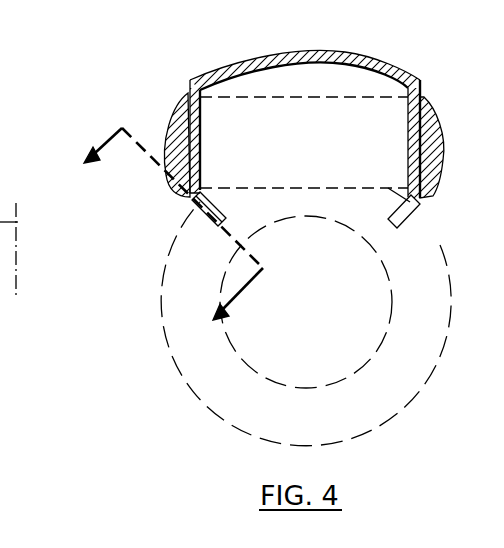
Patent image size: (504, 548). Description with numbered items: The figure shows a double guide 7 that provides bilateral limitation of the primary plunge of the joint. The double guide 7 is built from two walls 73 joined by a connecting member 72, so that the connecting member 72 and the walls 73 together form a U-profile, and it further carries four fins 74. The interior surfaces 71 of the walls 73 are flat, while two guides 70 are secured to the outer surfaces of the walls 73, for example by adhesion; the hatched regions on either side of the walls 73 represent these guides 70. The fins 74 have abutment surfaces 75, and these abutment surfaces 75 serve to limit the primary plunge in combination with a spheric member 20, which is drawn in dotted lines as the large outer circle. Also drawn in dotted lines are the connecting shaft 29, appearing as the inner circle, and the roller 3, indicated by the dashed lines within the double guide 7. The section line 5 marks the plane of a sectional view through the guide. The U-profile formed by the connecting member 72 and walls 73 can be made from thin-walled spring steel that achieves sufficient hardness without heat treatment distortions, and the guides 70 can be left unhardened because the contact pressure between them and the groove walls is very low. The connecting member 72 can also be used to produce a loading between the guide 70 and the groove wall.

The roller 3 is at (248, 98).
The section line 5- 5 is at (167, 233).
The double guide 7 is at (388, 65).
The spheric member 20 is at (452, 311).
The connecting shaft 29 is at (356, 373).
The guide 70 is at (443, 121).
The interior surface 71 is at (207, 119).
The connecting member 72 is at (316, 51).
The wall 73 is at (408, 153).
The fin 74 is at (420, 217).
The abutment surface 75 is at (420, 212).